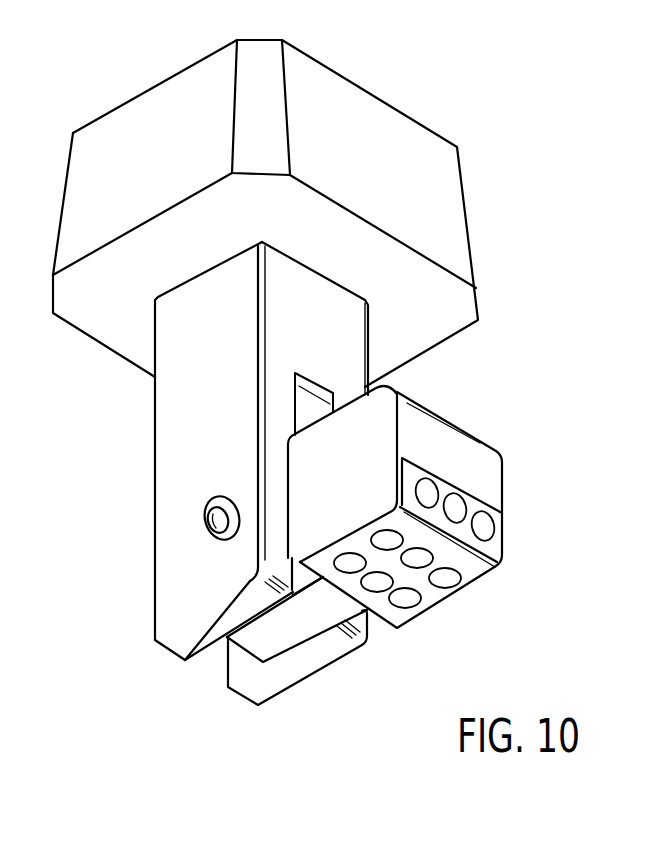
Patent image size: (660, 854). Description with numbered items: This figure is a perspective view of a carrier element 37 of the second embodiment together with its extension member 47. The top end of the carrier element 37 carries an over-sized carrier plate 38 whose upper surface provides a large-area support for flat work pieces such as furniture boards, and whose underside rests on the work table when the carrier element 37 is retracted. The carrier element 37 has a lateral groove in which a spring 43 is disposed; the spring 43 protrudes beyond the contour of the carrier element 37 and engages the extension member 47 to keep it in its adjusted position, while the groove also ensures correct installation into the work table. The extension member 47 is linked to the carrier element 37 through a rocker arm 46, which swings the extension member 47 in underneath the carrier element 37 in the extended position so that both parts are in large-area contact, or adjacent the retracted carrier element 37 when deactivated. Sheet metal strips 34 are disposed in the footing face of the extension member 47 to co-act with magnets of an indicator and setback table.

The carrier plate 38 is at (387, 184).
The carrier element 37 is at (493, 304).
The spring 43 is at (300, 403).
The extension member 47 is at (455, 461).
The sheet metal strips 34 is at (466, 527).
The rocker arm 46 is at (293, 620).